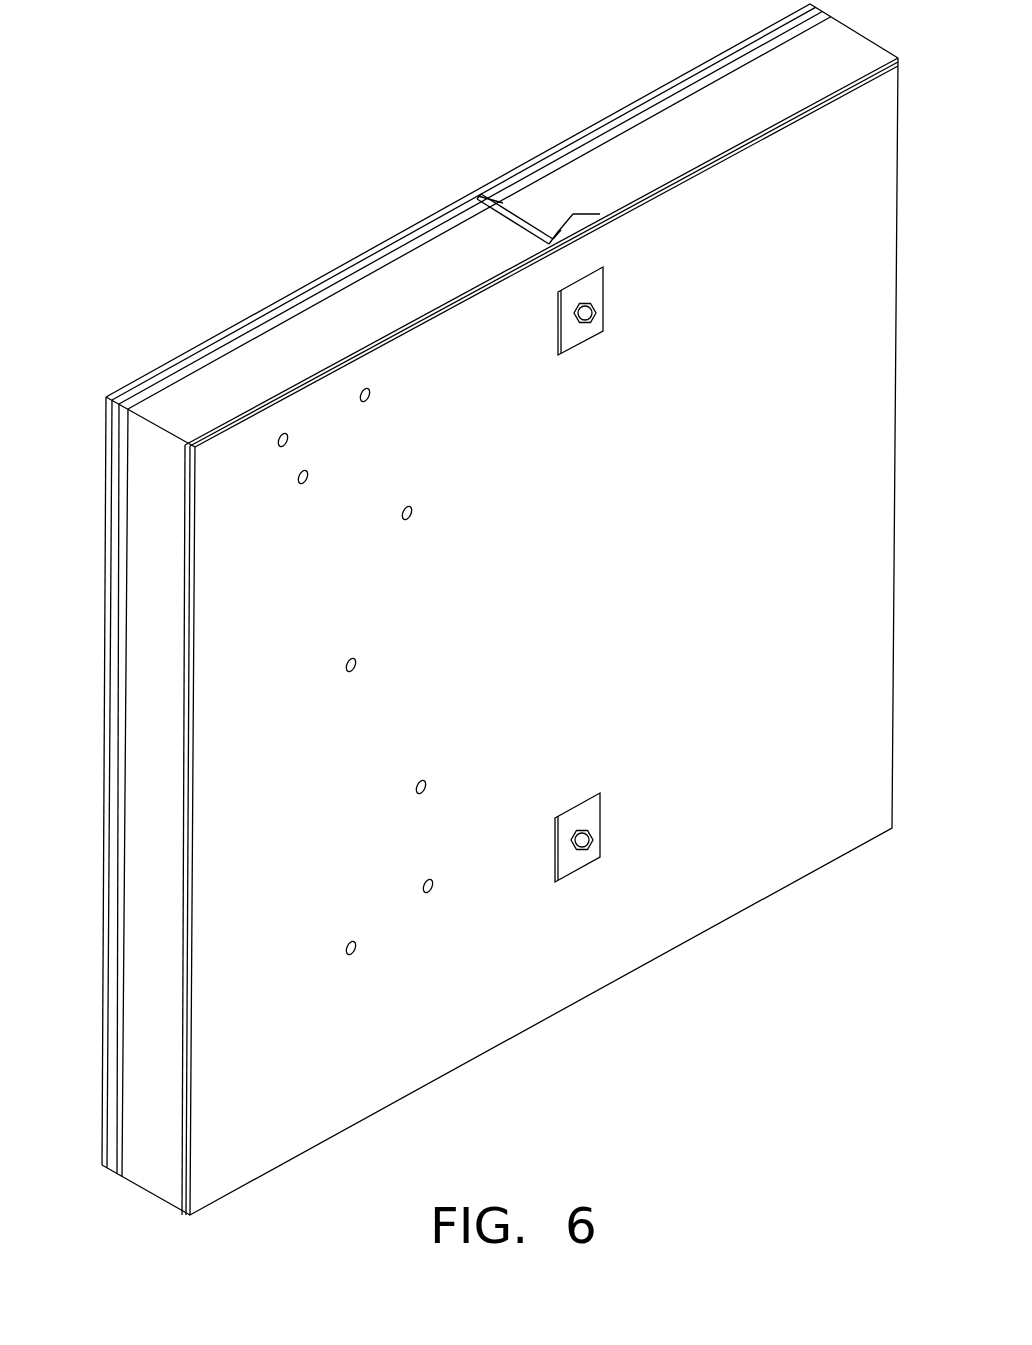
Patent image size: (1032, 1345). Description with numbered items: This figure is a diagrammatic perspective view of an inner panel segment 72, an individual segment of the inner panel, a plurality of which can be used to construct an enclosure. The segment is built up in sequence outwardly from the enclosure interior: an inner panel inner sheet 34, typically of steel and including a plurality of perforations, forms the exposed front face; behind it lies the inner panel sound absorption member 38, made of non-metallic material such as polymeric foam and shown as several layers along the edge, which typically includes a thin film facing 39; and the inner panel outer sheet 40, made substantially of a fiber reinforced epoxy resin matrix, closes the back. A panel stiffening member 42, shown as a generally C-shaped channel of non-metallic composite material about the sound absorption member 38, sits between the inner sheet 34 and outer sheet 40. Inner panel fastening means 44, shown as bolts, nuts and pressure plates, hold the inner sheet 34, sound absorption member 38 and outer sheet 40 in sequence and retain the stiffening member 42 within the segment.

The inner panel segment 72 is at (256, 246).
The inner panel inner sheet 34 is at (601, 618).
The inner panel sound absorption member 38 is at (140, 712).
The thin film facing 39 is at (185, 1215).
The inner panel outer sheet 40 is at (108, 480).
The panel stiffening member 42 is at (497, 180).
The inner panel fastening means 44 is at (598, 316).